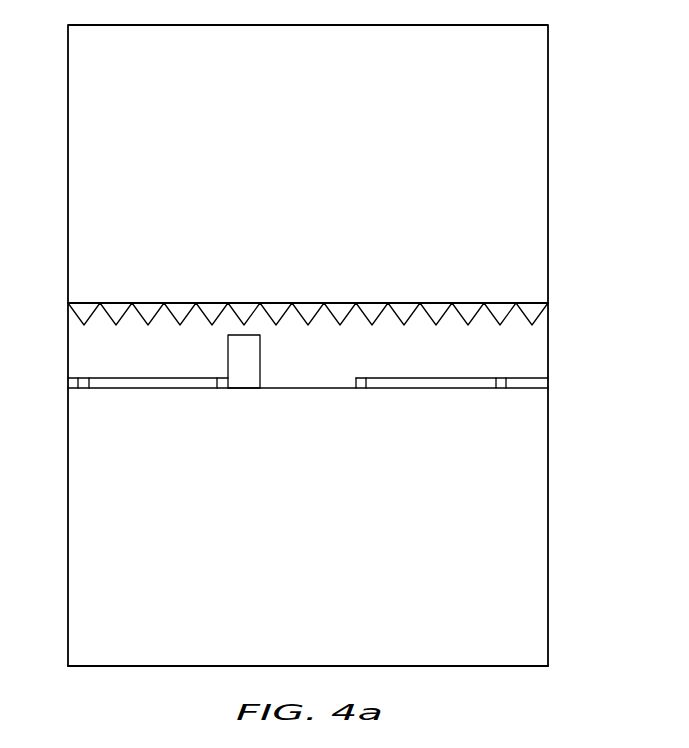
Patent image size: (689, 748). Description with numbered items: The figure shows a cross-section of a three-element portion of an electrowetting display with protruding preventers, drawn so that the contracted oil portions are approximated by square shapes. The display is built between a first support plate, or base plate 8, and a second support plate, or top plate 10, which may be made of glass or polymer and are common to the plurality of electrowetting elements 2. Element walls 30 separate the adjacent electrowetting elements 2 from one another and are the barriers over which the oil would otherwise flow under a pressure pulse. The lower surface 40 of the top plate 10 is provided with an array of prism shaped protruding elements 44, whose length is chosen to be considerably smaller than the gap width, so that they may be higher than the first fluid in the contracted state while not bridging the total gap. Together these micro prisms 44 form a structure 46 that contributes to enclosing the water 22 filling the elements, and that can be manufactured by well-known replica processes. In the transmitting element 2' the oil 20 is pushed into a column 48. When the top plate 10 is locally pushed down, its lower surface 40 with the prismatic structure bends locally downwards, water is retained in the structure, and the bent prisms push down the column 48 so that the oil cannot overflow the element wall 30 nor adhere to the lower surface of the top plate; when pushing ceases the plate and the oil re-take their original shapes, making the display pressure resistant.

The second support plate 10 is at (532, 157).
The first support plate 8 is at (535, 528).
The water 22 is at (532, 347).
The lower surface 40 is at (310, 293).
The protruding element 44 is at (113, 308).
The structure 46 is at (530, 310).
The electrowetting element 2 is at (148, 401).
The transmitting element 2' is at (292, 382).
The first fluid 20 is at (359, 361).
The column 48 is at (235, 357).
The element wall 30 is at (225, 384).